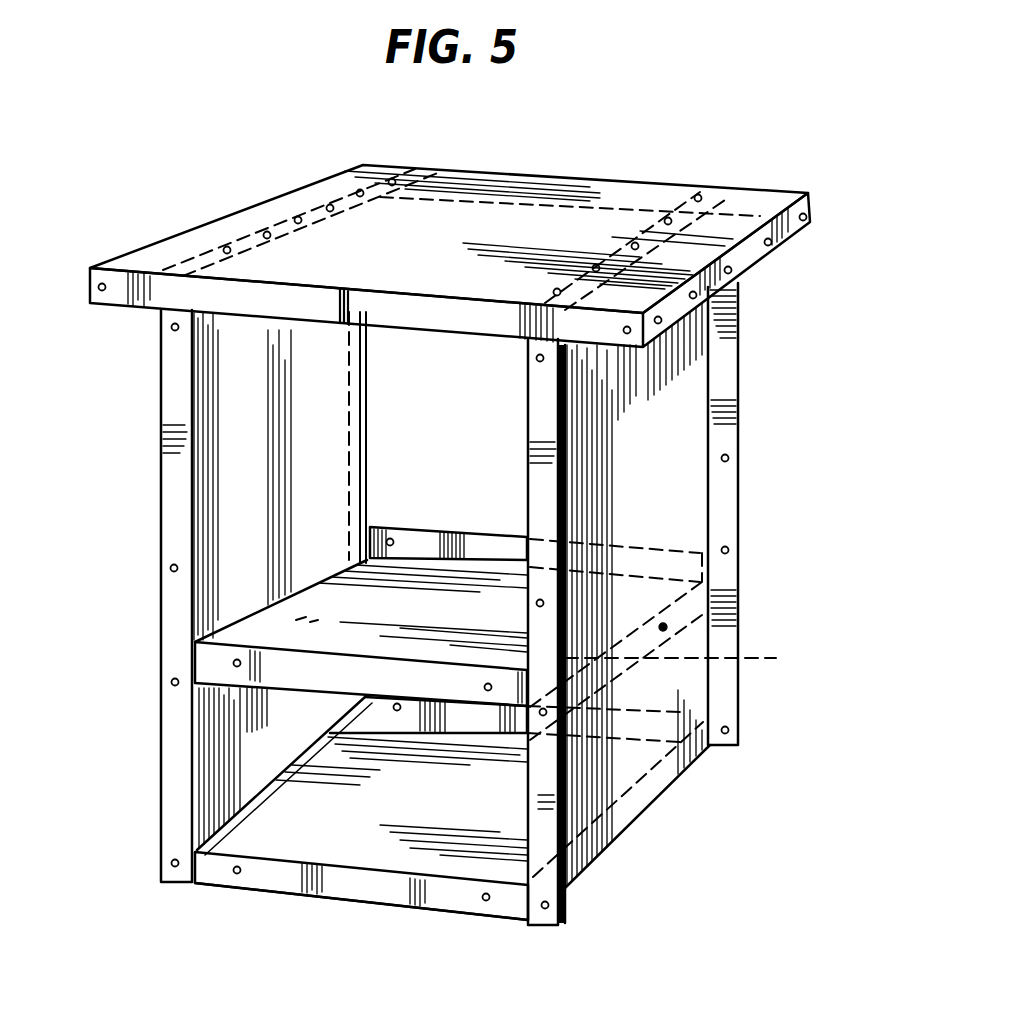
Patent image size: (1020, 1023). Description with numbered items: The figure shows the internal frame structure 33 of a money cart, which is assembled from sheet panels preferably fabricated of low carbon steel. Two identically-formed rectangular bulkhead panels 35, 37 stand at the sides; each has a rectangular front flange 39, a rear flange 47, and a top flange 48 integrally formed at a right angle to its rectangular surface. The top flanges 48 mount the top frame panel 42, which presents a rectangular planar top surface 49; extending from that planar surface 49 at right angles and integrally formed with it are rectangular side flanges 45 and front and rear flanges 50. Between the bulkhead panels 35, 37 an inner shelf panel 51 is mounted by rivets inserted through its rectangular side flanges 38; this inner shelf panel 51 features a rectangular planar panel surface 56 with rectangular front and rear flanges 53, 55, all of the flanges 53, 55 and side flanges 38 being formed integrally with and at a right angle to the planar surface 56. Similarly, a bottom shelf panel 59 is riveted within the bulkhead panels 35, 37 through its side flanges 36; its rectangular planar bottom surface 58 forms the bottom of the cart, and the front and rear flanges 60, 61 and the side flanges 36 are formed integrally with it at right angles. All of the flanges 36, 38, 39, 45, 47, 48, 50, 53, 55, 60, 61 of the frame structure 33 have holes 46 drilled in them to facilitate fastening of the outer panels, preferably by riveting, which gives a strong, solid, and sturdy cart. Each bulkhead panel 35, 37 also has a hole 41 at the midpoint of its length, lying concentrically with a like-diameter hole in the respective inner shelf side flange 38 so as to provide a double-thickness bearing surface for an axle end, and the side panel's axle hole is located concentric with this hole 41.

The internal frame structure 33 is at (649, 134).
The bulkhead panel 35 is at (672, 404).
The side flange 36 is at (620, 810).
The bulkhead panel 37 is at (237, 437).
The side flange 38 is at (218, 690).
The front flange 39 is at (172, 373).
The hole 41 is at (667, 626).
The top frame panel 42 is at (551, 172).
The side flange 45 is at (91, 272).
The hole 46 is at (768, 242).
The rear flange 47 is at (730, 347).
The top flange 48 is at (350, 200).
The planar top surface 49 is at (457, 190).
The front and rear flange 50 is at (705, 194).
The inner shelf panel 51 is at (448, 593).
The front flange 53 is at (491, 553).
The rear flange 55 is at (263, 628).
The planar panel surface 56 is at (421, 595).
The planar bottom surface 58 is at (446, 835).
The bottom shelf panel 59 is at (353, 900).
The front flange 60 is at (279, 878).
The rear flange 61 is at (412, 710).